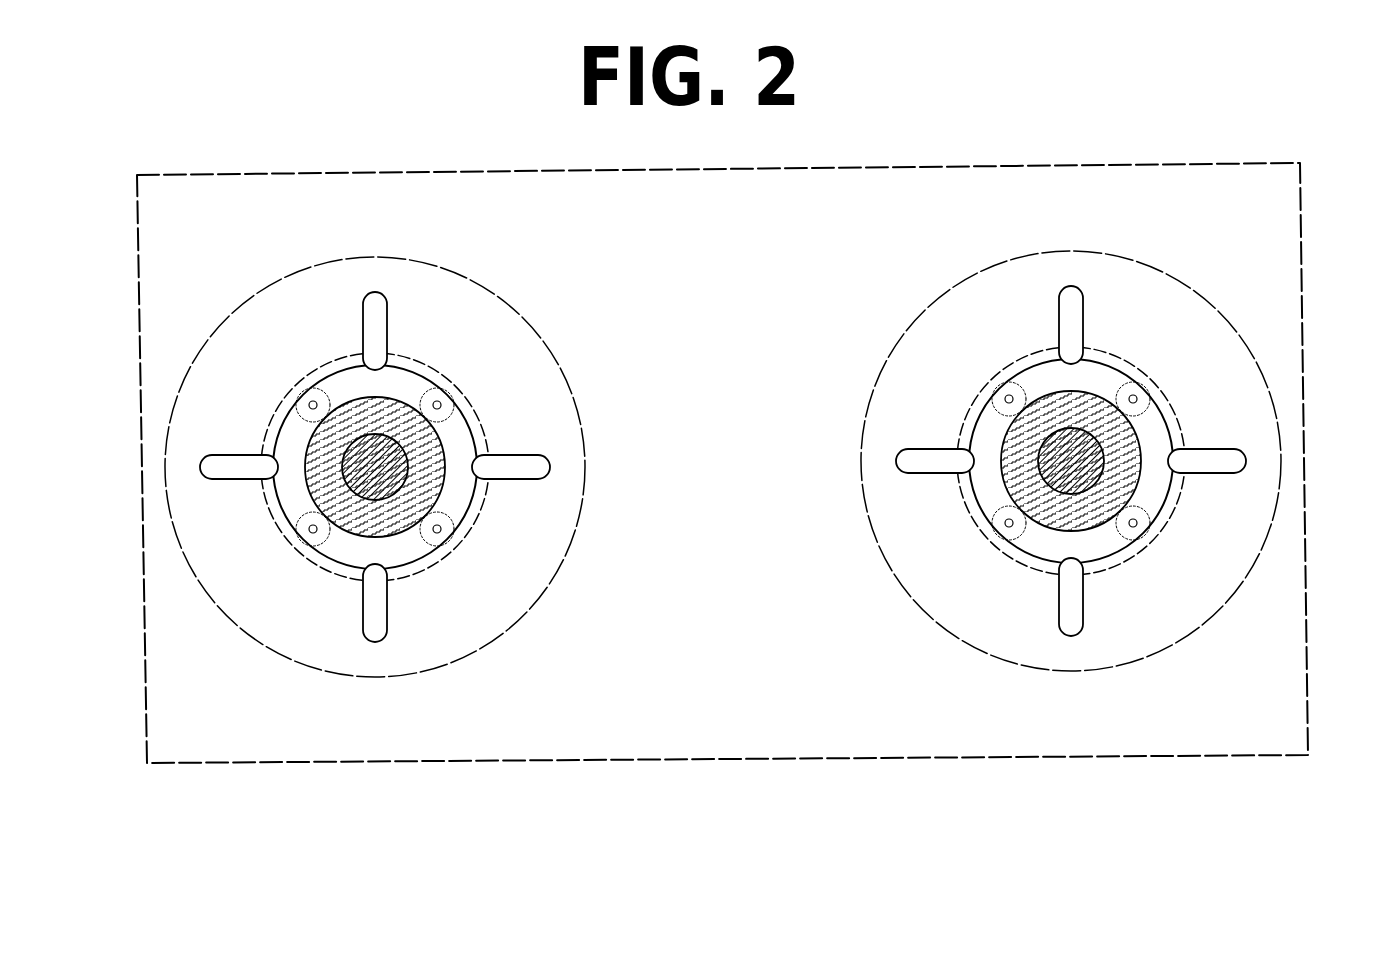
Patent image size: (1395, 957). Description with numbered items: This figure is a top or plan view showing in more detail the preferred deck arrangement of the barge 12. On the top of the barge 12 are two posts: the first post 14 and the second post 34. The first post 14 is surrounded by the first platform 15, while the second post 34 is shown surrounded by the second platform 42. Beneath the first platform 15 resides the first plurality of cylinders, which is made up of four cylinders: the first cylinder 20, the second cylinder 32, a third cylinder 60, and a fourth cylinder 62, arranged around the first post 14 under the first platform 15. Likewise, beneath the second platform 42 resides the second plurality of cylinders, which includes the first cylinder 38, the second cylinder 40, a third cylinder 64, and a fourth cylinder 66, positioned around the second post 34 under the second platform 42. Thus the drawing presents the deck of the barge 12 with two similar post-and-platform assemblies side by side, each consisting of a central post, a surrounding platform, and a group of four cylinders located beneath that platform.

The barge 12 is at (222, 176).
The first post 14 is at (360, 497).
The first platform 15 is at (273, 507).
The first cylinder 20 is at (295, 546).
The second cylinder 32 is at (447, 548).
The second post 34 is at (1080, 495).
The first cylinder 38 is at (997, 553).
The second cylinder 40 is at (1153, 533).
The second platform 42 is at (1180, 483).
The third cylinder 60 is at (300, 388).
The fourth cylinder 62 is at (448, 392).
The third cylinder 64 is at (995, 370).
The fourth cylinder 66 is at (1148, 378).